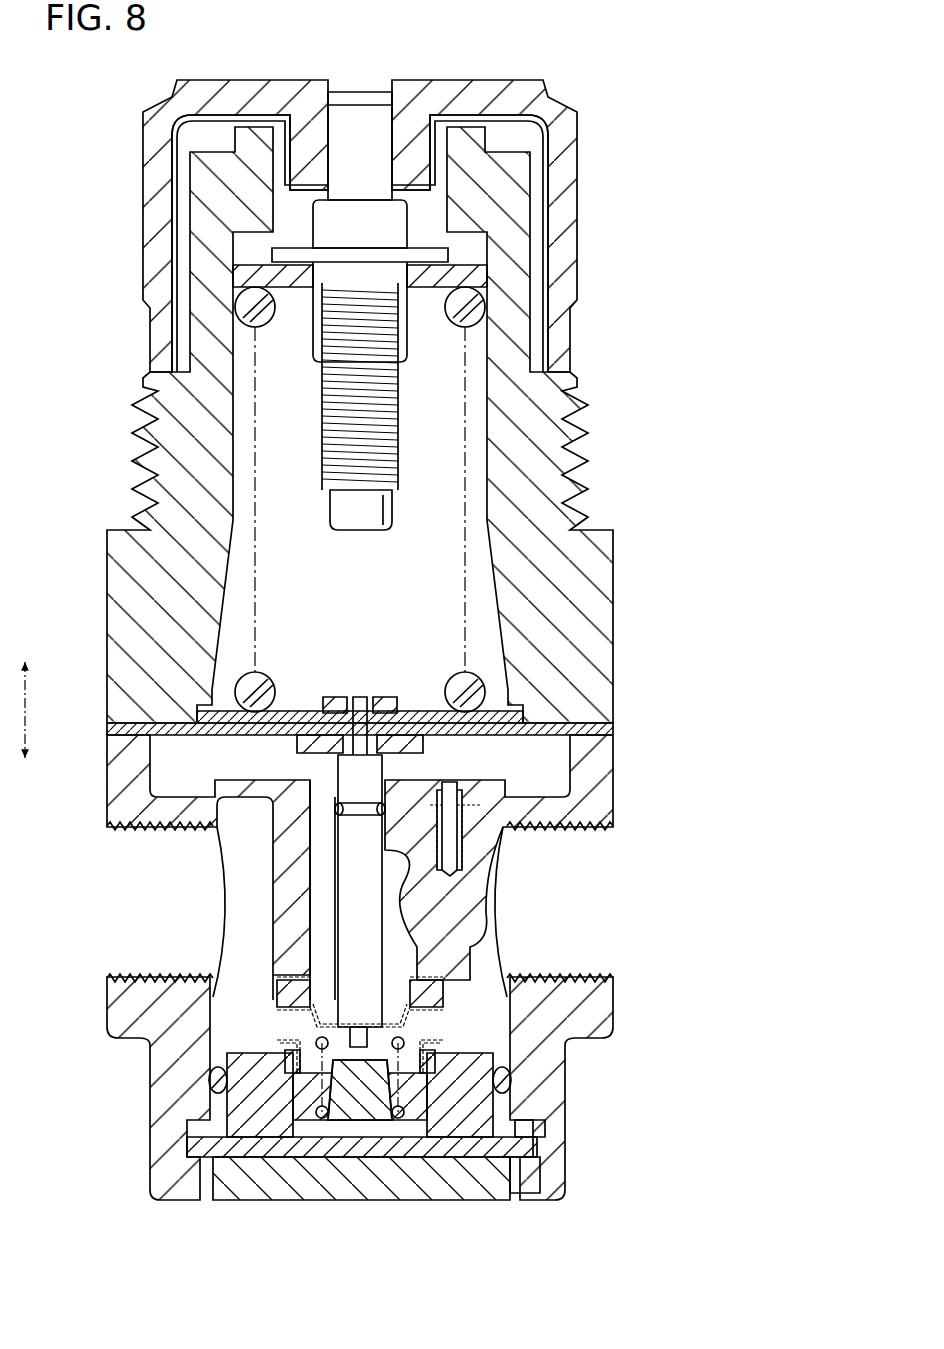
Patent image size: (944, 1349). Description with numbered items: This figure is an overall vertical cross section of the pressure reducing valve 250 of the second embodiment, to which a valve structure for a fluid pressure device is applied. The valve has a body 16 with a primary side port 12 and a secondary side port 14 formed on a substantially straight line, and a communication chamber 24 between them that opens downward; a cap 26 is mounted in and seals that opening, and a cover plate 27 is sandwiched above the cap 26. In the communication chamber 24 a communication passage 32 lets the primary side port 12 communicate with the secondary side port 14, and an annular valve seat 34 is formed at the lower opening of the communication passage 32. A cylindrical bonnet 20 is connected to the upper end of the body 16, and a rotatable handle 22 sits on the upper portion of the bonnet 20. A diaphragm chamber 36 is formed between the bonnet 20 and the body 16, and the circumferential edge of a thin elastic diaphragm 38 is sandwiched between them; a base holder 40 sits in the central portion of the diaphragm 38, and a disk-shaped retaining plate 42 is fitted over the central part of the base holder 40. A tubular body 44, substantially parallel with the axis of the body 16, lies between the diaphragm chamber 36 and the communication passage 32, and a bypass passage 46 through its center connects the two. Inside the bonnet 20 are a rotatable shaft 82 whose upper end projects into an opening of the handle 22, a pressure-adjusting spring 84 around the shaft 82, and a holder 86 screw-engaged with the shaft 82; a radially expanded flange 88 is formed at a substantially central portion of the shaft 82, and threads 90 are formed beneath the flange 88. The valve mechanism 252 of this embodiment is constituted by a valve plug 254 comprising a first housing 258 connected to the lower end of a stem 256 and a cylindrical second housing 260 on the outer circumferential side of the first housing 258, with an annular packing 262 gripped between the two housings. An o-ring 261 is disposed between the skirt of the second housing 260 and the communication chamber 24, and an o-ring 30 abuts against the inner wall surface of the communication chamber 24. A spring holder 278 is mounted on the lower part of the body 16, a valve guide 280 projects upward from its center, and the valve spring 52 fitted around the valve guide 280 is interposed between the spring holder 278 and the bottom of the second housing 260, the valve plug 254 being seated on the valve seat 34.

The pressure reducing valve 250 is at (626, 66).
The handle 22 is at (133, 185).
The holder 86 is at (235, 272).
The flange 88 is at (430, 257).
The pressure-adjusting spring 84 is at (456, 320).
The threads 90 is at (372, 442).
The shaft 82 is at (361, 530).
The bonnet 20 is at (619, 628).
The retaining plate 42 is at (298, 708).
The diaphragm 38 is at (185, 736).
The base holder 40 is at (312, 745).
The tubular body 44 is at (466, 786).
The diaphragm chamber 36 is at (545, 767).
The stem 256 is at (350, 877).
The primary side port 12 is at (125, 887).
The communication passage 32 is at (400, 880).
The bypass passage 46 is at (455, 860).
The first housing 258 is at (395, 960).
The valve mechanism 252 is at (335, 996).
The valve plug 254 is at (458, 993).
The secondary side port 14 is at (600, 927).
The valve seat 34 is at (276, 992).
The second housing 260 is at (275, 1000).
The packing 262 is at (428, 1004).
The communication chamber 24 is at (227, 1013).
The body 16 is at (145, 1095).
The o-ring 30 is at (508, 1087).
The cap 26 is at (234, 1198).
The o-ring 261 is at (270, 1075).
The valve guide 280 is at (353, 1087).
The valve spring 52 is at (393, 1120).
The spring holder 278 is at (462, 1108).
The cover plate 27 is at (485, 1147).